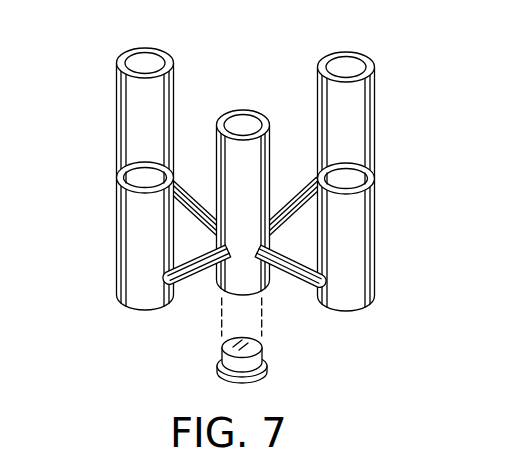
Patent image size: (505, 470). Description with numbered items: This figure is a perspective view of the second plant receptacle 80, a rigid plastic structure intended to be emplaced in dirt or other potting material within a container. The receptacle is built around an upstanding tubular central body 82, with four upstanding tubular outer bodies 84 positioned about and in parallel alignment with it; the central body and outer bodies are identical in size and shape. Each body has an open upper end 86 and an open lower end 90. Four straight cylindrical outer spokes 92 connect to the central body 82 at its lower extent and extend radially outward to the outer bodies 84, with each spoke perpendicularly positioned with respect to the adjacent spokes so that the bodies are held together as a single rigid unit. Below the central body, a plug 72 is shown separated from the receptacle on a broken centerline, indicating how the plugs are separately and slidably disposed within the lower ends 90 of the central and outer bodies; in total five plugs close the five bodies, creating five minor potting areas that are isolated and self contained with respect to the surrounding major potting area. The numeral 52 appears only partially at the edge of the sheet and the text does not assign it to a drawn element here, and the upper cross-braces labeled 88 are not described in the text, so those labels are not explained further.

The drying rack 52 is at (10, 142).
The plug 72 is at (220, 362).
The second plant receptacle 80 is at (103, 193).
The tubular central body 82 is at (222, 112).
The tubular outer bodies 84 is at (242, 160).
The open upper end 86 is at (147, 52).
The upper cross braces 88 is at (242, 206).
The open lower end 90 is at (132, 308).
The outer spokes 92 is at (292, 280).